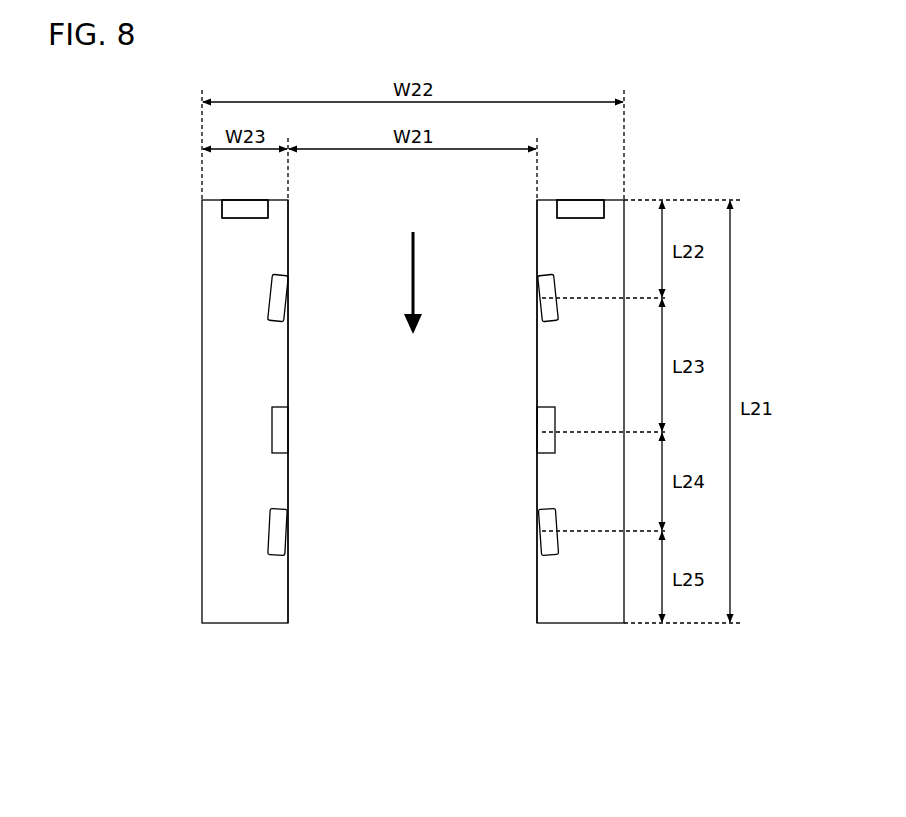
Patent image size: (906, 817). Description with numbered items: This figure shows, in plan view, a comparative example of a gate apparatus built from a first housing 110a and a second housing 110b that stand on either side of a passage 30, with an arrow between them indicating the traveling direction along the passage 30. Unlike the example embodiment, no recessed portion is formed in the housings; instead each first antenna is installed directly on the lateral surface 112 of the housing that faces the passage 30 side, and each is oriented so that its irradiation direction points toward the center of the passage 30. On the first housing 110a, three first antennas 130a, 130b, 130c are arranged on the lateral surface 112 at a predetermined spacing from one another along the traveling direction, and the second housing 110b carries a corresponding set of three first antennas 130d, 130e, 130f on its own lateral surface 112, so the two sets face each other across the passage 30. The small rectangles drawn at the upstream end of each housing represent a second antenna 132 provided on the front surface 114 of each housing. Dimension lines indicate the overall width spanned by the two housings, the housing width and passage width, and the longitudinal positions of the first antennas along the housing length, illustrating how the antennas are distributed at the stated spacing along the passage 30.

The first housing 110a is at (248, 623).
The second housing 110b is at (583, 623).
The lateral surface 112 is at (288, 590).
The front surface 114 is at (281, 200).
The second antenna 132 is at (238, 207).
The first antenna 130a is at (292, 300).
The first antenna 130b is at (292, 431).
The first antenna 130c is at (292, 532).
The first antenna 130d is at (533, 300).
The first antenna 130e is at (533, 431).
The first antenna 130f is at (533, 532).
The passage 30 is at (412, 578).